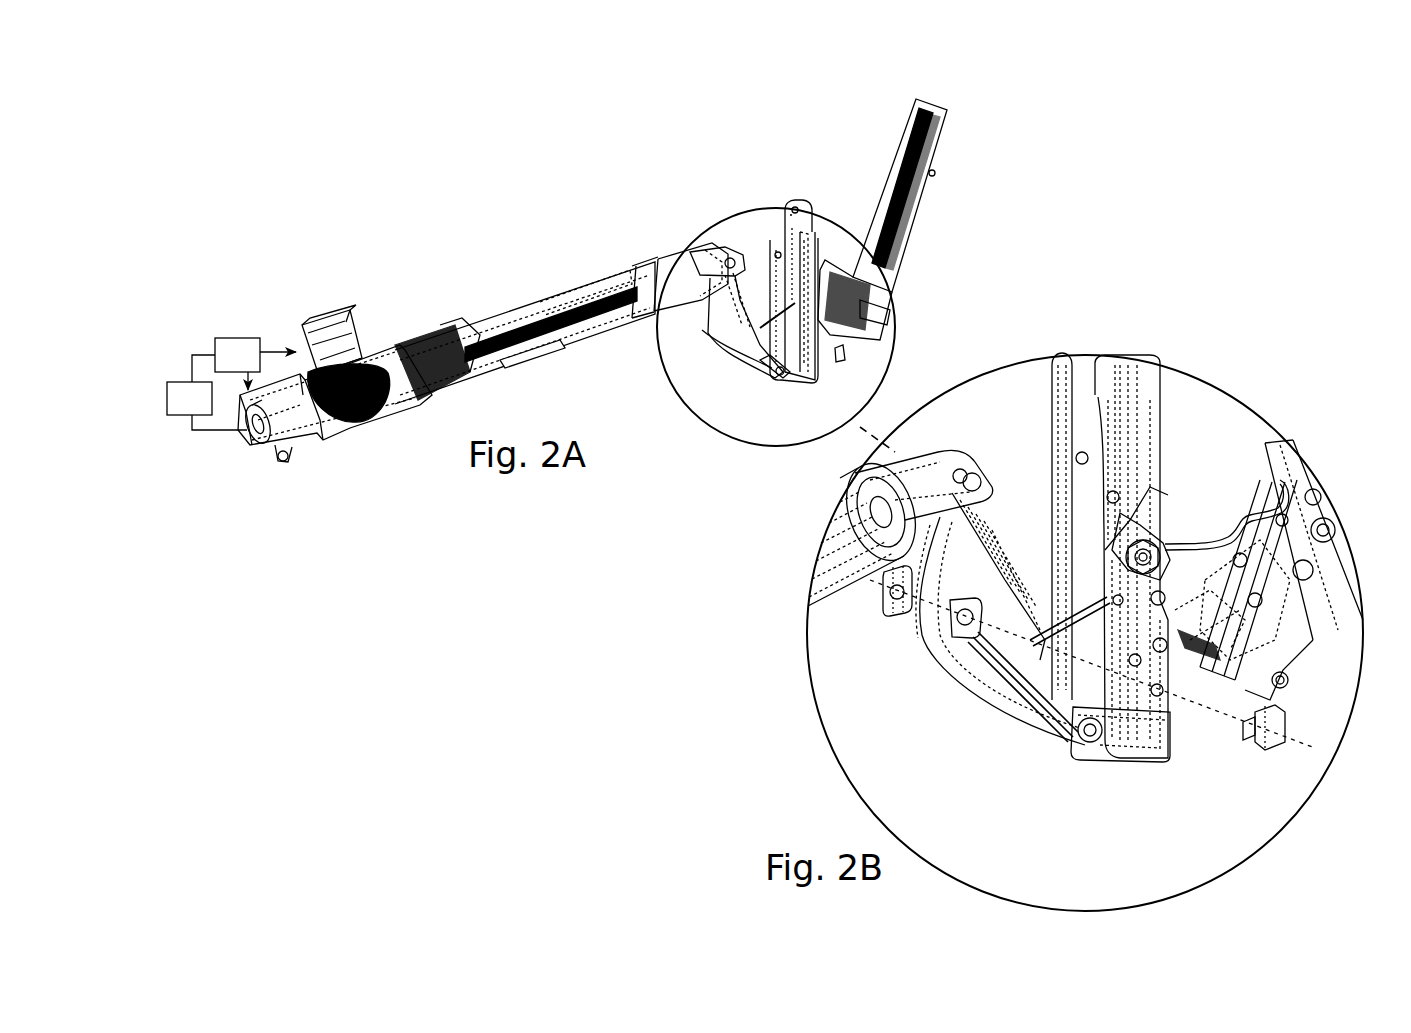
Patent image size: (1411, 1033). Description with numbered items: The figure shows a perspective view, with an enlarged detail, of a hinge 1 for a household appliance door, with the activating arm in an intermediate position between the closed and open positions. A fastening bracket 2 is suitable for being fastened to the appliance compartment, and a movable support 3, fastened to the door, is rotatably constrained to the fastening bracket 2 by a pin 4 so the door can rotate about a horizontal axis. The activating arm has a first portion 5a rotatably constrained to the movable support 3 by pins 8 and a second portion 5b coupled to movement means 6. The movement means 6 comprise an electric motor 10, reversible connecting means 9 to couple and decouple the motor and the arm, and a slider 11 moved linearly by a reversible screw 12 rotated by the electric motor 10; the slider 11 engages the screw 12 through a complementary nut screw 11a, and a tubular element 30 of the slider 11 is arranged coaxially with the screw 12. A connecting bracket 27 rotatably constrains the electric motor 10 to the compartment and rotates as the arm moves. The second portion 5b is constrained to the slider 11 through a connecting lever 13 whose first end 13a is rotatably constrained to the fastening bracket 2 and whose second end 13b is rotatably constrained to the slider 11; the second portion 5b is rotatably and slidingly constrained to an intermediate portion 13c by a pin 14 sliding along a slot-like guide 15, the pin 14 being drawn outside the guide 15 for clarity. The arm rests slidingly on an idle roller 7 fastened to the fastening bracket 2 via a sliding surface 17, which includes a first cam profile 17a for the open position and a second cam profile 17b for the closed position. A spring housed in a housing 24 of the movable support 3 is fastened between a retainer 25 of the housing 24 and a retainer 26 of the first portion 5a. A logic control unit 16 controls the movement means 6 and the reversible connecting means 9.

In FIG. 2A, the hinge 1 is at (1086, 204).
In FIG. 2A, the fastening bracket 2 is at (812, 400).
In FIG. 2B, the fastening bracket 2 is at (1170, 487).
In FIG. 2A, the movable support 3 is at (938, 218).
In FIG. 2B, the pin 4 is at (1290, 675).
In FIG. 2A, the first portion of the activating arm 5a is at (885, 283).
In FIG. 2B, the second portion of the activating arm 5b is at (1007, 650).
In FIG. 2A, the movement means 6 is at (710, 162).
In FIG. 2A, the idle roller 7 is at (805, 283).
In FIG. 2B, the idle roller 7 is at (1115, 384).
In FIG. 2B, the pins 8 is at (1253, 485).
In FIG. 2A, the reversible connecting means 9 is at (418, 328).
In FIG. 2A, the electric motor 10 is at (357, 448).
In FIG. 2A, the slider 11 is at (615, 272).
In FIG. 2A, the nut screw 11a is at (540, 307).
In FIG. 2A, the screw 12 is at (478, 333).
In FIG. 2B, the connecting lever 13 is at (903, 640).
In FIG. 2A, the first end of the connecting lever 13a is at (767, 373).
In FIG. 2B, the first end of the connecting lever 13a is at (1055, 718).
In FIG. 2A, the second end of the connecting lever 13b is at (743, 262).
In FIG. 2B, the second end of the connecting lever 13b is at (990, 548).
In FIG. 2A, the intermediate portion of the connecting lever 13c is at (760, 370).
In FIG. 2B, the intermediate portion of the connecting lever 13c is at (968, 665).
In FIG. 2B, the pin 14 is at (1245, 727).
In FIG. 2B, the guide 15 is at (1027, 600).
In FIG. 2A, the logic control unit 16 is at (237, 338).
In FIG. 2A, the sliding surface 17 is at (770, 298).
In FIG. 2B, the sliding surface 17 is at (1058, 355).
In FIG. 2B, the first cam profile 17a is at (1230, 510).
In FIG. 2B, the second cam profile 17b is at (1088, 588).
In FIG. 2A, the housing 24 is at (900, 180).
In FIG. 2A, the retainer 25 is at (935, 173).
In FIG. 2A, the retainer 26 is at (897, 285).
In FIG. 2A, the connecting bracket 27 is at (307, 442).
In FIG. 2A, the tubular element 30 is at (657, 262).
In FIG. 2B, the tubular element 30 is at (843, 573).